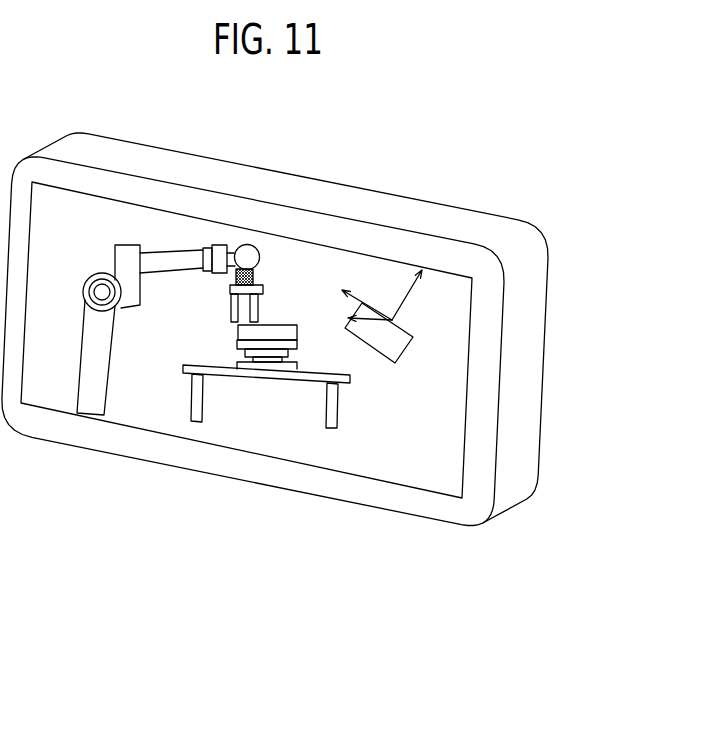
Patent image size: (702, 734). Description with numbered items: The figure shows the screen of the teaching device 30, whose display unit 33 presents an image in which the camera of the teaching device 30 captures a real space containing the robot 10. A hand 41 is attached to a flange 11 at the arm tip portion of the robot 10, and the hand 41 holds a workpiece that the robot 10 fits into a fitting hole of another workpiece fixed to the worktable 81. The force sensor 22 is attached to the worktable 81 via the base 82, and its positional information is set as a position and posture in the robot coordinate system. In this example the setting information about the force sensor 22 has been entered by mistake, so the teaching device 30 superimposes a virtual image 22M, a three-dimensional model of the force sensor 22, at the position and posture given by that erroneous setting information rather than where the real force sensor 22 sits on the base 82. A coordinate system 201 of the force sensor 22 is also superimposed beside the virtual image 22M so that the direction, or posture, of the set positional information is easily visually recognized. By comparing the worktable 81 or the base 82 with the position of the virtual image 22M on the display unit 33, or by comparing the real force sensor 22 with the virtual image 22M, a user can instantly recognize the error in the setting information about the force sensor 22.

The robot 10 is at (175, 248).
The flange 11 is at (257, 280).
The hand 41 is at (264, 291).
The coordinate system 201 is at (402, 290).
The teaching device 30 is at (423, 200).
The virtual image 22M is at (407, 350).
The force sensor 22 is at (240, 332).
The base 82 is at (238, 346).
The worktable 81 is at (312, 382).
The display unit 33 is at (420, 465).